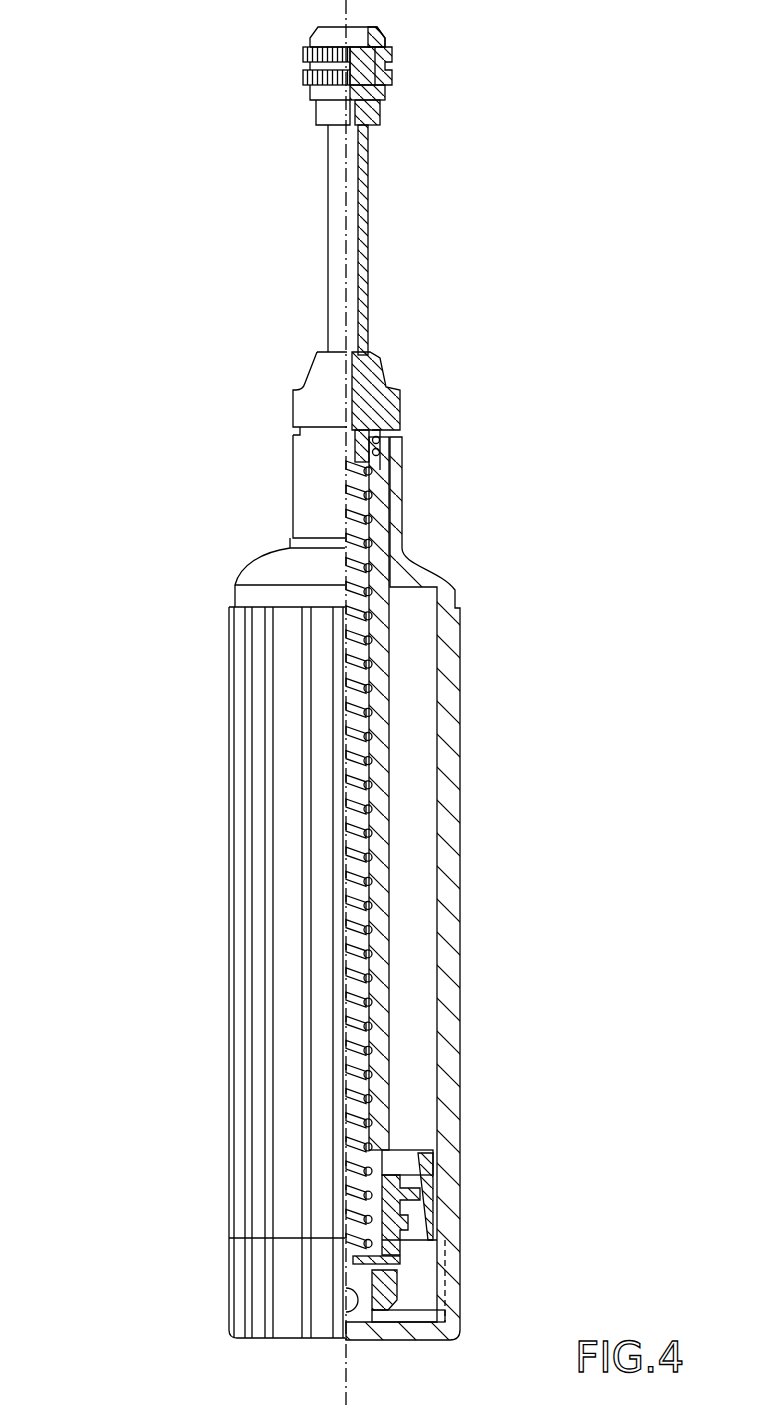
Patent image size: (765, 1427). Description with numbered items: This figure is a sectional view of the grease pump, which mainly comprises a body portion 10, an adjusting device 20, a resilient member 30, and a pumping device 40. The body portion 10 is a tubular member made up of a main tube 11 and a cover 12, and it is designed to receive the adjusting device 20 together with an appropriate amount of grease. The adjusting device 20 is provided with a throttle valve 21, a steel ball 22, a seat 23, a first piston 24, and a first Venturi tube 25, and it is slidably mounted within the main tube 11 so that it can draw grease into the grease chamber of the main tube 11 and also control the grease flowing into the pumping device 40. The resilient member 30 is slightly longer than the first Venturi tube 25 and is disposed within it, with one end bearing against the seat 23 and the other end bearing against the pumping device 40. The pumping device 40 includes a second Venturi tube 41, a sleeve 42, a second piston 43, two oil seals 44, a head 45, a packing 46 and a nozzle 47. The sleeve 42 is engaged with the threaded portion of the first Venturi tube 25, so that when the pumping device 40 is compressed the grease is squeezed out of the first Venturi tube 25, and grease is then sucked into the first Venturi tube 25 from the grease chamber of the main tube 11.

The body portion 10 is at (196, 998).
The main tube 11 is at (230, 808).
The cover 12 is at (228, 1291).
The adjusting device 20 is at (410, 953).
The throttle valve 21 is at (393, 1284).
The steel ball 22 is at (355, 1340).
The seat 23 is at (383, 1257).
The first piston 24 is at (420, 1192).
The first Venturi tube 25 is at (383, 866).
The resilient member 30 is at (367, 762).
The pumping device 40 is at (415, 243).
The second Venturi tube 41 is at (337, 249).
The sleeve 42 is at (292, 410).
The second piston 43 is at (367, 447).
The oil seals 44 is at (390, 440).
The head 45 is at (383, 113).
The packing 46 is at (393, 50).
The nozzle 47 is at (305, 63).